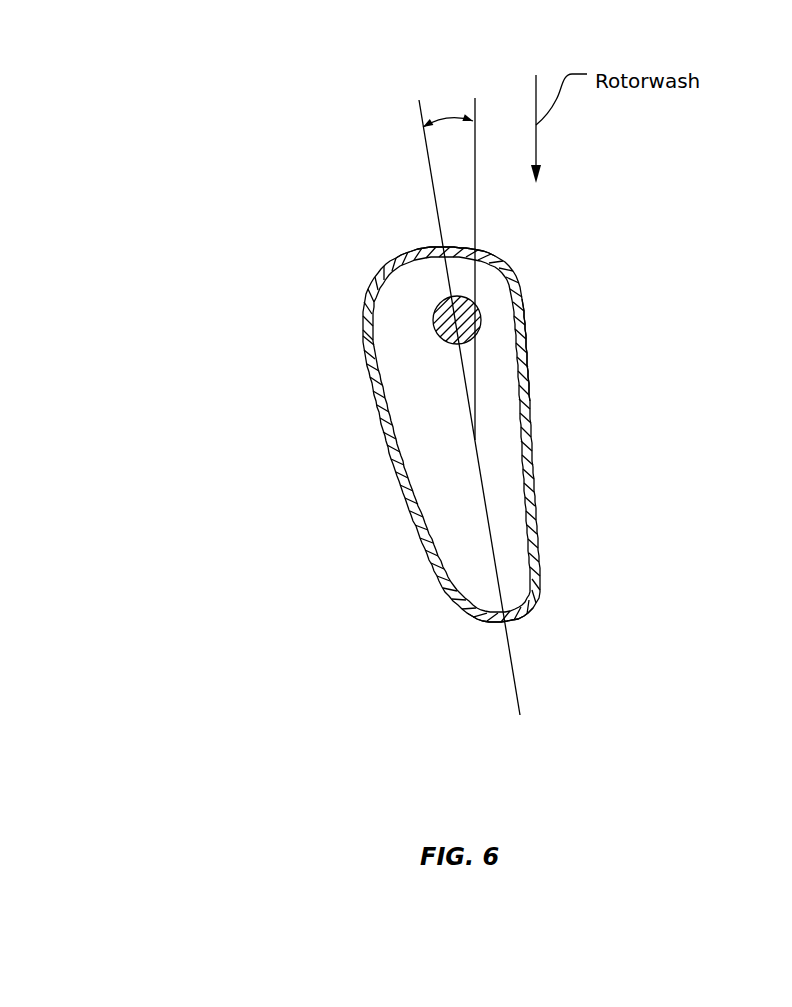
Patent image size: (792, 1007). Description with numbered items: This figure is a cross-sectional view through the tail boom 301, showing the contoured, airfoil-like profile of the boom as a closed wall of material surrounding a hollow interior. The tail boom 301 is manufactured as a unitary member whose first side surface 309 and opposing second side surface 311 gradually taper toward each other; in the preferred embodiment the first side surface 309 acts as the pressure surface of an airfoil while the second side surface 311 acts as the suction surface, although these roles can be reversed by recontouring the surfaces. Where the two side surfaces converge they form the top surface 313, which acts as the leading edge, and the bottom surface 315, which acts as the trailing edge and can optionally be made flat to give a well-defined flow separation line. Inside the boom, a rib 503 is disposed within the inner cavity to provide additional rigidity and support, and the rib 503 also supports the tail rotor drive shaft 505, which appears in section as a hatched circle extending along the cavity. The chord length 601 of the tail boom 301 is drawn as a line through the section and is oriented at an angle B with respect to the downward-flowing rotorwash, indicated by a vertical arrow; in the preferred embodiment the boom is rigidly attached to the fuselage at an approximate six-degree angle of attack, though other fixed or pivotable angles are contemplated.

The tail boom 301 is at (305, 175).
The first side surface 309 is at (563, 357).
The second side surface 311 is at (372, 385).
The top surface 313 is at (415, 248).
The bottom surface 315 is at (497, 620).
The rib 503 is at (450, 512).
The tail rotor drive shaft 505 is at (480, 312).
The chord length 601 is at (493, 542).
The angle B is at (450, 118).